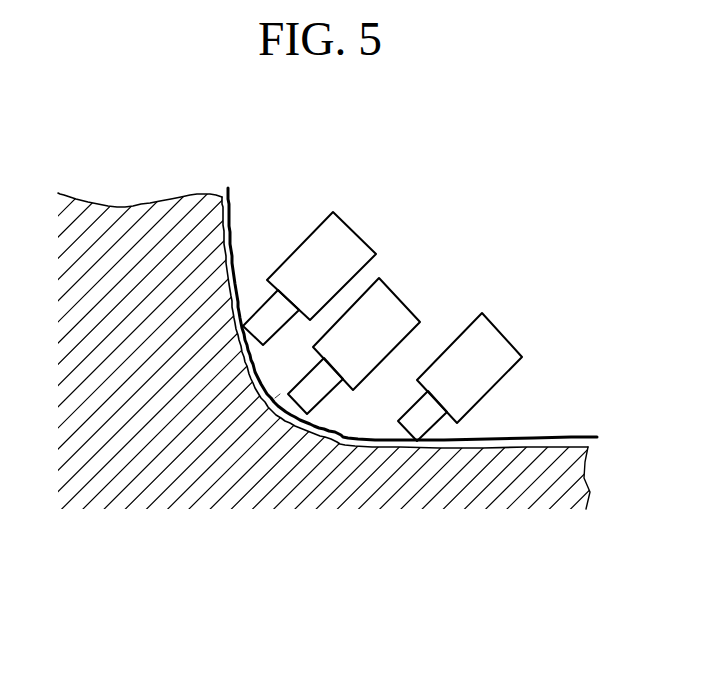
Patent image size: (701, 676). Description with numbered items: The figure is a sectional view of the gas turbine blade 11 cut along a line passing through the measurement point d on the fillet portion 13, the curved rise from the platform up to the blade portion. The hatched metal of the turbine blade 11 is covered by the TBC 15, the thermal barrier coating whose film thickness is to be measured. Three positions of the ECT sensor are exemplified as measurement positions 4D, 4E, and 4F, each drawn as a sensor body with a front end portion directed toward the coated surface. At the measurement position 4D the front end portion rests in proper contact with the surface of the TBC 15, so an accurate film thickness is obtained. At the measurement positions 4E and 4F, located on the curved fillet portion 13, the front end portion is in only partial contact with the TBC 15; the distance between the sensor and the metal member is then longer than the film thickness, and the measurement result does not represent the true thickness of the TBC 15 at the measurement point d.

The turbine blade 11 is at (163, 202).
The fillet portion 13 is at (271, 409).
The TBC 15 is at (232, 203).
The measurement position of ECT sensor 4E is at (352, 238).
The measurement position of ECT sensor 4D is at (396, 303).
The measurement position of ECT sensor 4F is at (502, 343).
The measurement point d is at (282, 394).